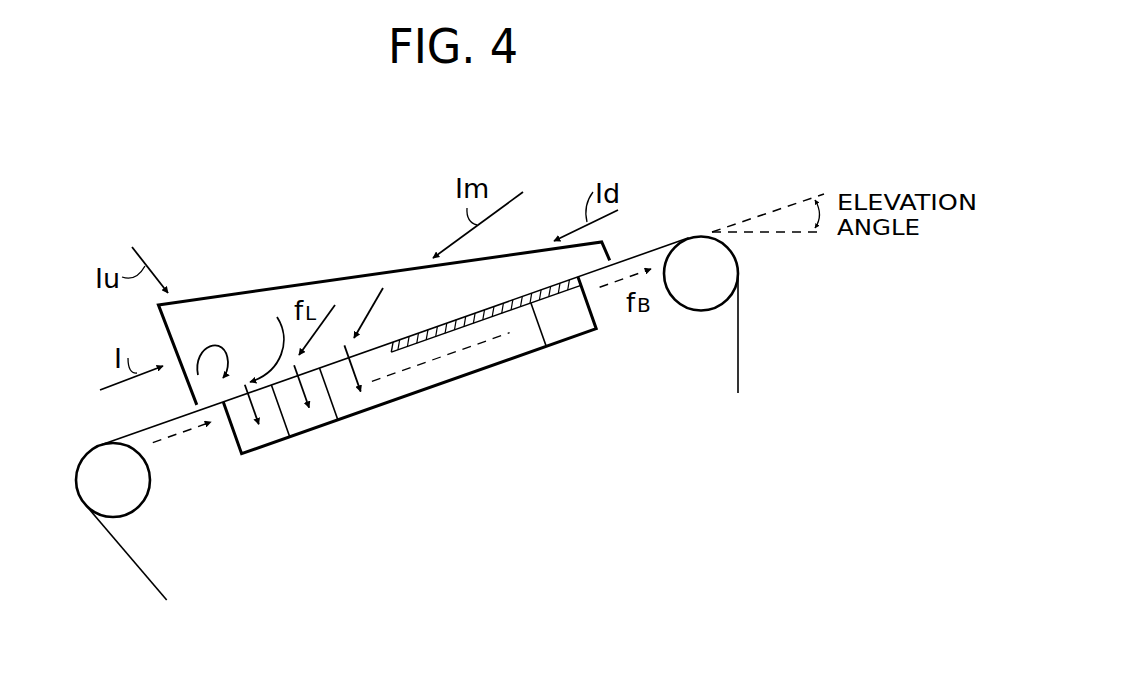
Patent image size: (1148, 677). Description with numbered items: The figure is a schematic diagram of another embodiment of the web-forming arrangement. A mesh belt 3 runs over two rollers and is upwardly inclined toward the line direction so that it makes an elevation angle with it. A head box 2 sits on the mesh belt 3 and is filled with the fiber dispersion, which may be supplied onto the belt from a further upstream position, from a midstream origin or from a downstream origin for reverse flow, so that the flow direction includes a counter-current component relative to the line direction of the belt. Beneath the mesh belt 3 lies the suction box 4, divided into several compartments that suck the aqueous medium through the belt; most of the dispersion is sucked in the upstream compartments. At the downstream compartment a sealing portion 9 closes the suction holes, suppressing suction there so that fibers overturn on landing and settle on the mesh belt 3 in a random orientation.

The head box 2 is at (245, 310).
The mesh belt 3 is at (650, 248).
The suction box 4 is at (413, 384).
The sealing portion 9 is at (520, 306).